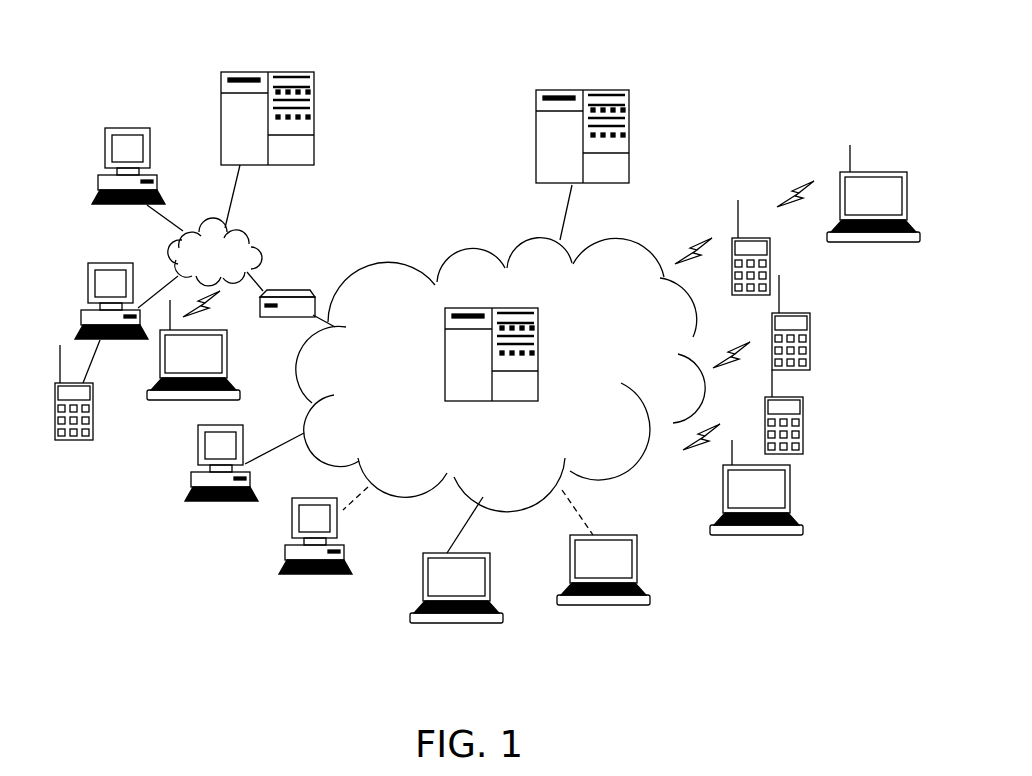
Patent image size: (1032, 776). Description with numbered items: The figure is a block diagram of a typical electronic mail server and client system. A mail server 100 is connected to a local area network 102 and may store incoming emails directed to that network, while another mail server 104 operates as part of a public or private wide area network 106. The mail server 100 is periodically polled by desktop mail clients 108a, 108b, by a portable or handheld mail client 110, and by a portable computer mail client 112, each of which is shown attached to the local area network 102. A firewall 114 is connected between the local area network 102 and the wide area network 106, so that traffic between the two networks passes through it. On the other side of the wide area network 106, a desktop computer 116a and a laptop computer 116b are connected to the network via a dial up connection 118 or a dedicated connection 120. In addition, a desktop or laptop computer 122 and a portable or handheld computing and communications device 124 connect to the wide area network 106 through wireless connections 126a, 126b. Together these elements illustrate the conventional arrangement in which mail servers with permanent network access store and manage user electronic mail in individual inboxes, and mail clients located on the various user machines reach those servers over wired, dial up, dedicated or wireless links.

The mail server 100 is at (276, 88).
The local area network 102 is at (242, 234).
The mail server 104 is at (518, 346).
The wide area network 106 is at (500, 357).
The desktop mail client 108a is at (131, 138).
The desktop mail client 108b is at (92, 281).
The portable/handheld mail client 110 is at (58, 392).
The portable computer mail client 112 is at (218, 350).
The firewall 114 is at (306, 275).
The desktop computer 116a is at (343, 536).
The laptop computer 116b is at (478, 571).
The dial up connection 118 is at (326, 483).
The dedicated connection 120 is at (444, 525).
The desktop or laptop computer 122 is at (778, 487).
The portable/handheld computing/communications device 124 is at (818, 322).
The wireless connection 126a is at (726, 411).
The wireless connection 126b is at (717, 337).